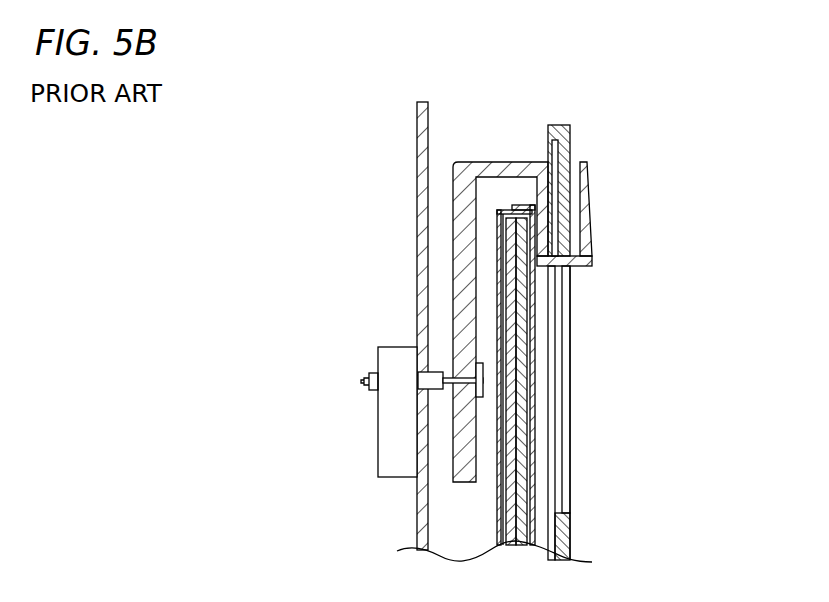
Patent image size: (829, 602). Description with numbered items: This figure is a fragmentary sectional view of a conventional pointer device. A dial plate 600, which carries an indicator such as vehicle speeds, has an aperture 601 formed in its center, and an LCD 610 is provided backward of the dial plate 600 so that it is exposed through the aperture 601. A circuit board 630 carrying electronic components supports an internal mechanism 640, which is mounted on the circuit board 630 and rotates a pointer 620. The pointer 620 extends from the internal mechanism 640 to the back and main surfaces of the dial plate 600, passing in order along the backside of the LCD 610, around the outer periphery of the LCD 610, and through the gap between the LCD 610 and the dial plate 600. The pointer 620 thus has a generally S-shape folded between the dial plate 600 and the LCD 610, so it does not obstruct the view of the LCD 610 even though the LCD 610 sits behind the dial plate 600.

The dial plate 600 is at (570, 148).
The aperture 601 is at (582, 313).
The LCD 610 is at (523, 330).
The pointer 620 is at (498, 150).
The circuit board 630 is at (430, 147).
The internal mechanism 640 is at (400, 347).